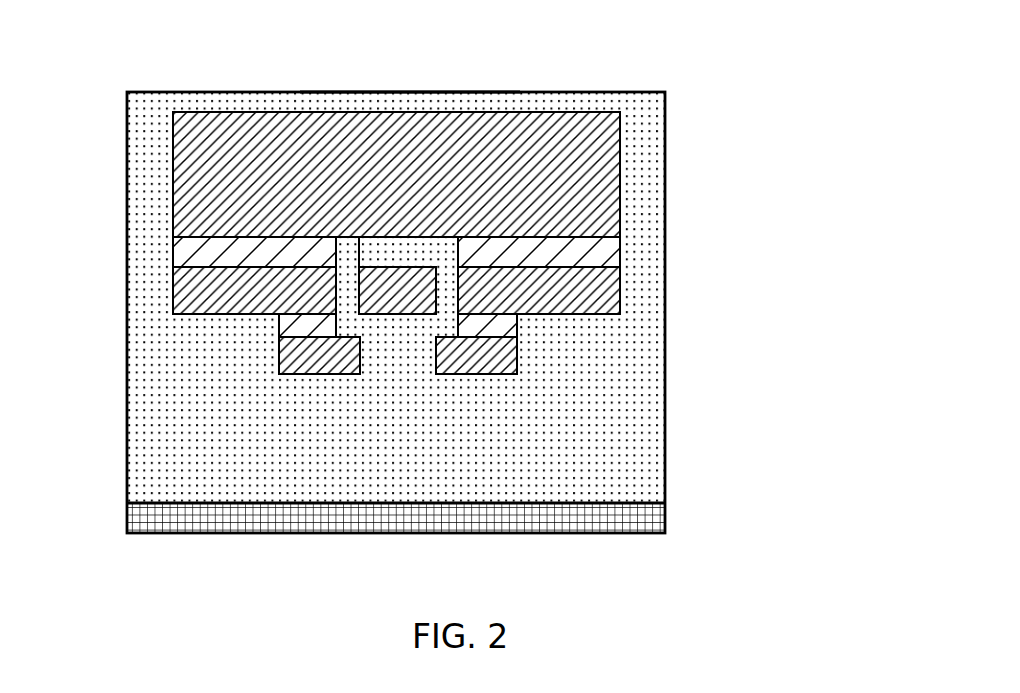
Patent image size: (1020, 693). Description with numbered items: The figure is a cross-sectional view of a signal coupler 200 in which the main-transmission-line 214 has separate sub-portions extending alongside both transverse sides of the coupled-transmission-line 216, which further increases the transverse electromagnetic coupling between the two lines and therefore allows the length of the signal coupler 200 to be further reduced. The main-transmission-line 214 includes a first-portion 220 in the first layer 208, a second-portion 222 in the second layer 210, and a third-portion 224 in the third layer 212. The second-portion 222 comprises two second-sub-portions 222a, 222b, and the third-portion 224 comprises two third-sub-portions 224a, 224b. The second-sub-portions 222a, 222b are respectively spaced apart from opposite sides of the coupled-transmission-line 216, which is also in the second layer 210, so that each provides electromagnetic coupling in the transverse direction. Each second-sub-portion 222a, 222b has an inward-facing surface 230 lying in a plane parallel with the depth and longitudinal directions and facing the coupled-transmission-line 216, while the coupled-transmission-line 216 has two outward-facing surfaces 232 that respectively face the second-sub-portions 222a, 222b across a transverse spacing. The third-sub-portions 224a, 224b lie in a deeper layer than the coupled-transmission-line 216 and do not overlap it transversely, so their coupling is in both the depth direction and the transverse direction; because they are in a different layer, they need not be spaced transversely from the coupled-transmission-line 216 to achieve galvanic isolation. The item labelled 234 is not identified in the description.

The signal coupler 200 is at (609, 91).
The first layer 208 is at (455, 135).
The second layer 210 is at (461, 308).
The third layer 212 is at (458, 457).
The main-transmission-line 214 is at (407, 109).
The coupled-transmission-line 216 is at (397, 314).
The first-portion 220 is at (173, 173).
The second-portion 222 is at (342, 402).
The second-sub-portion 222a is at (183, 278).
The second-sub-portion 222b is at (550, 292).
The third-portion 224 is at (203, 460).
The third-sub-portion 224a is at (310, 374).
The third-sub-portion 224b is at (476, 352).
The inward-facing surface 230 is at (345, 277).
The outward-facing surface 232 is at (351, 297).
The sidewall 234 is at (361, 360).